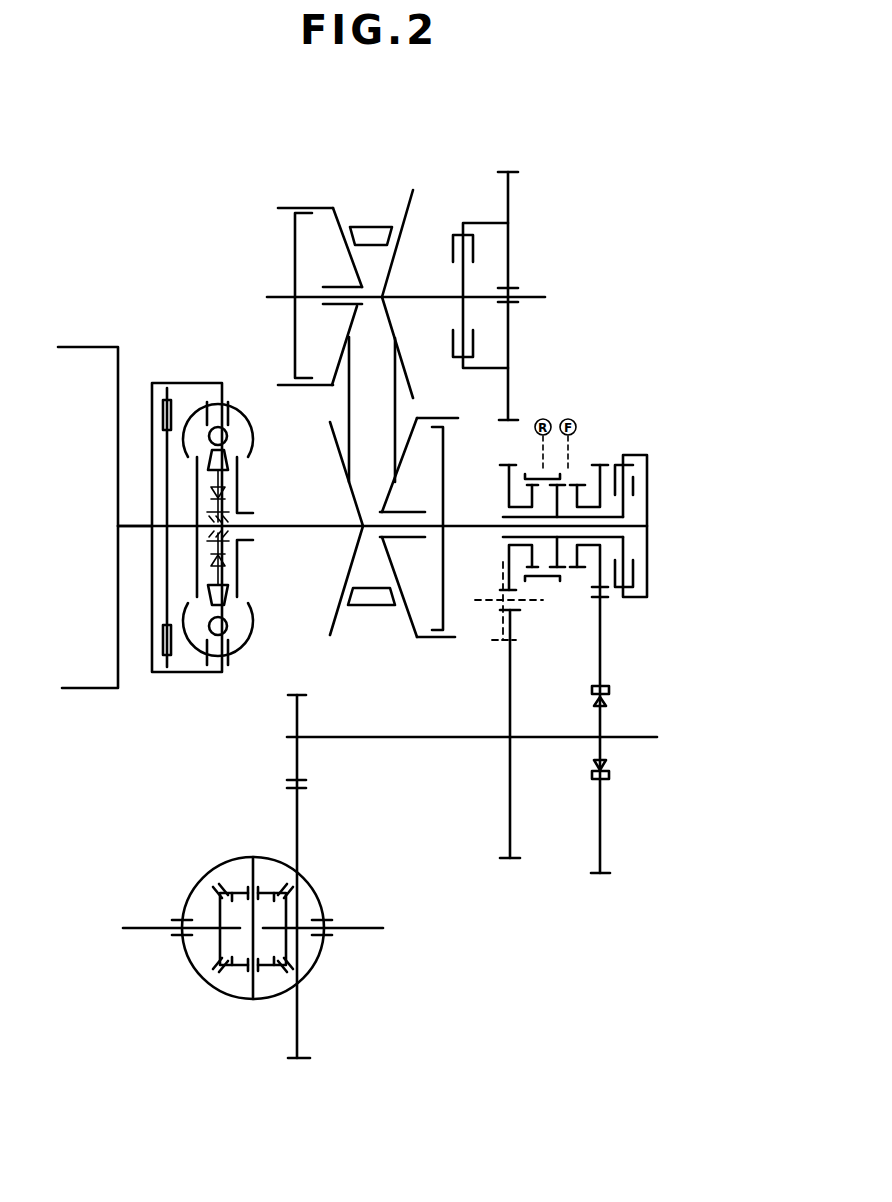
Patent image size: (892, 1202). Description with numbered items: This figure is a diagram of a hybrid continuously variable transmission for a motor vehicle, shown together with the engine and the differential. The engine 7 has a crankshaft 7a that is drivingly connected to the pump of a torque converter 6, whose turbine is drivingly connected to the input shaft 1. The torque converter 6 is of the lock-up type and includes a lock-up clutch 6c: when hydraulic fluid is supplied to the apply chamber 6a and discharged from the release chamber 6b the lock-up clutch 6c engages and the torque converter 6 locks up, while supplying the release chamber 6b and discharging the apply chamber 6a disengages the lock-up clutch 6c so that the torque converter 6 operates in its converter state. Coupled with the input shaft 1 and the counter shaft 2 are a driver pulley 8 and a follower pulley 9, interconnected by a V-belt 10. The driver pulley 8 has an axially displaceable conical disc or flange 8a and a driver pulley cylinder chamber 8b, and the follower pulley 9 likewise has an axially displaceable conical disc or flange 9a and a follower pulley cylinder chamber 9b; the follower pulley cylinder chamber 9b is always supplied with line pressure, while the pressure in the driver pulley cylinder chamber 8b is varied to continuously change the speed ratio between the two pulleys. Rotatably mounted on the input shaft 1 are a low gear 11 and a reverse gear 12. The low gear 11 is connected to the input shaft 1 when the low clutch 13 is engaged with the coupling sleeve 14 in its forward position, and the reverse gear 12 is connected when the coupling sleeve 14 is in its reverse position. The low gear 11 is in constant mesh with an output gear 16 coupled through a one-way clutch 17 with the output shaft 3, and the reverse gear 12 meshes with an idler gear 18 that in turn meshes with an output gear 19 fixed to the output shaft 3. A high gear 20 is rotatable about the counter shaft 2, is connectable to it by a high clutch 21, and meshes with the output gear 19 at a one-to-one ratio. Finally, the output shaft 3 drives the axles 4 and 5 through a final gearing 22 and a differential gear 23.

The input shaft 1 is at (289, 538).
The counter shaft 2 is at (535, 300).
The output shaft 3 is at (405, 740).
The axle 4 is at (150, 932).
The axle 5 is at (366, 931).
The torque converter 6 is at (189, 372).
The apply chamber 6a is at (173, 602).
The release chamber 6b is at (153, 600).
The lock-up clutch 6c is at (167, 660).
The engine 7 is at (82, 347).
The crankshaft 7a is at (132, 528).
The driver pulley 8 is at (404, 650).
The conical disc or flange 8a is at (435, 640).
The driver pulley cylinder chamber 8b is at (419, 527).
The follower pulley 9 is at (427, 188).
The conical disc or flange 9a is at (312, 208).
The follower pulley cylinder chamber 9b is at (333, 296).
The V-belt 10 is at (372, 226).
The low gear 11 is at (597, 464).
The reverse gear 12 is at (507, 464).
The low clutch 13 is at (615, 464).
The coupling sleeve 14 is at (545, 579).
The output gear 16 is at (602, 876).
The one-way clutch 17 is at (610, 765).
The idler gear 18 is at (493, 562).
The output gear 19 is at (505, 861).
The high gear 20 is at (515, 178).
The high clutch 21 is at (455, 235).
The final gearing 22 is at (297, 808).
The differential gear 23 is at (328, 970).